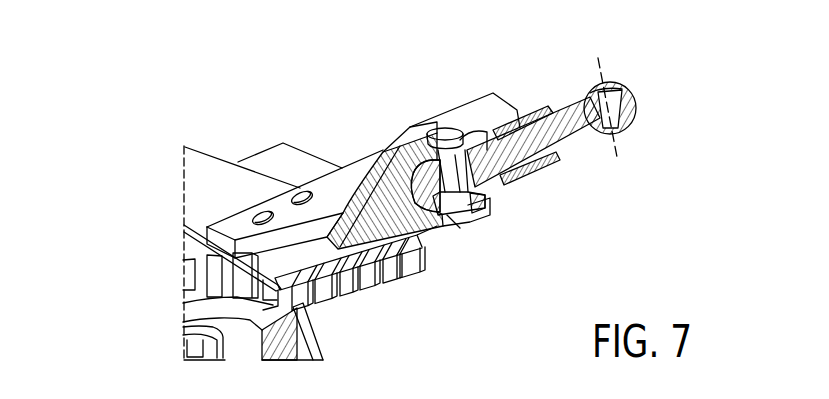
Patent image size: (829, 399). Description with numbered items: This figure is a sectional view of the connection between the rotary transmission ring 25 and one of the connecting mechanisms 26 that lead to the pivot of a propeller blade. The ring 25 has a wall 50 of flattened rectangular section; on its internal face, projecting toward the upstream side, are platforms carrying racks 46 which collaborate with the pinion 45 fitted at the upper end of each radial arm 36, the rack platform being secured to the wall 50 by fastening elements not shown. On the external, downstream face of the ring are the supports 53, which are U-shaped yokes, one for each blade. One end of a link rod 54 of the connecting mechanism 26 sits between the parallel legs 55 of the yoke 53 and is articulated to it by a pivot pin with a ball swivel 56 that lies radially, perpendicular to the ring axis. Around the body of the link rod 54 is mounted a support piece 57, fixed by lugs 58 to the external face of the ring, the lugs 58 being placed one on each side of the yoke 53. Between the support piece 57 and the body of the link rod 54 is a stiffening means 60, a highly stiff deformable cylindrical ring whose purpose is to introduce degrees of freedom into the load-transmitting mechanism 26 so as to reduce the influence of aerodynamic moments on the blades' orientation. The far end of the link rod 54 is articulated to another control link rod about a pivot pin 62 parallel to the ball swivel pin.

The rotary transmission ring 25 is at (176, 145).
The connecting mechanism 26 is at (665, 140).
The radial arm 36 is at (185, 338).
The pinion 45 is at (230, 308).
The rack 46 is at (348, 290).
The wall 50 is at (215, 192).
The support 53 is at (421, 250).
The link rod 54 is at (565, 138).
The parallel legs 55 is at (400, 148).
The pivot pin with a ball swivel 56 is at (461, 214).
The support piece 57 is at (487, 110).
The lugs 58 is at (322, 188).
The stiffening means 60 is at (540, 173).
The pivot pin 62 is at (601, 67).